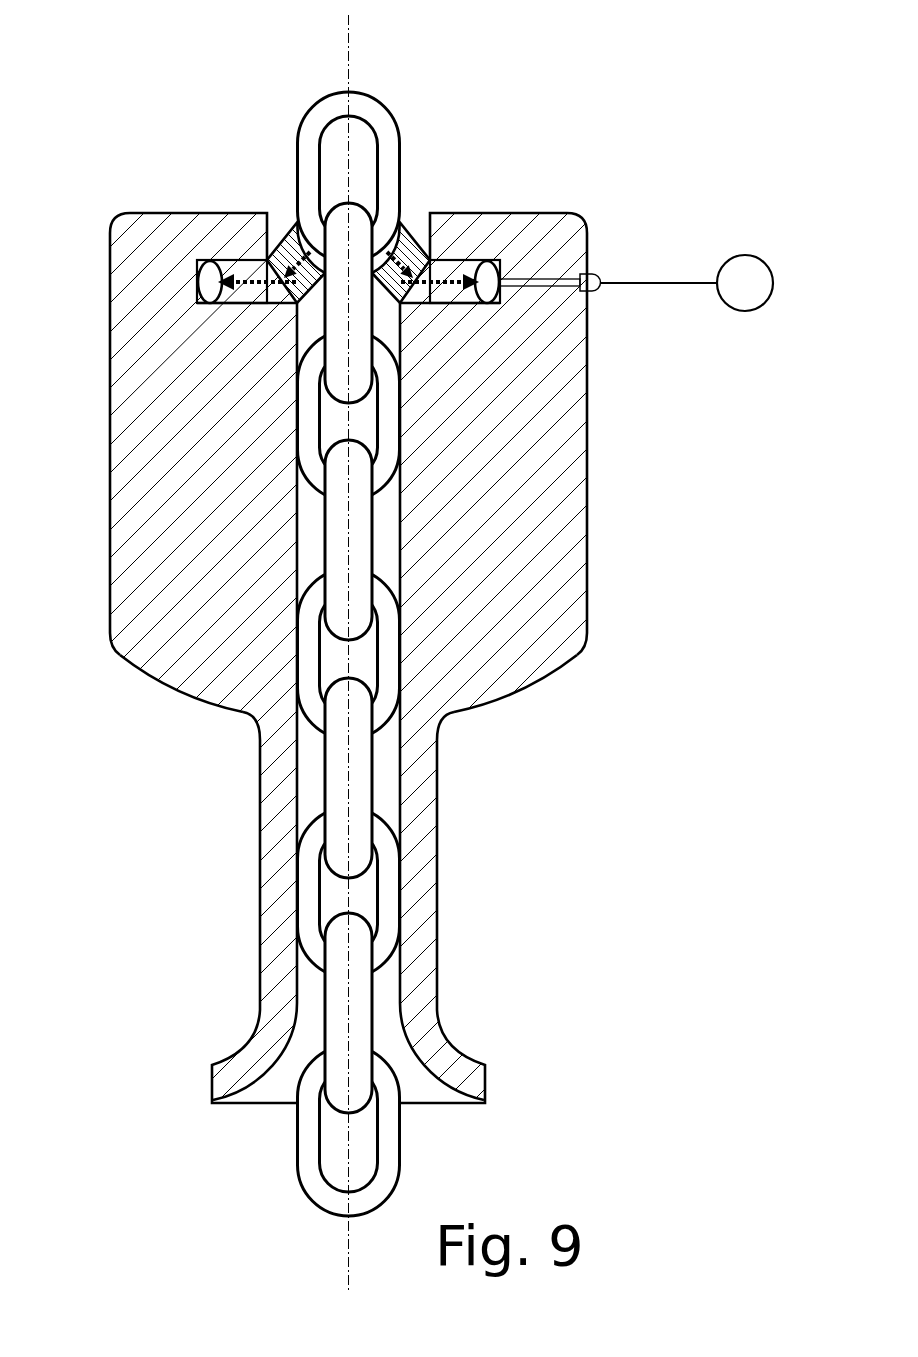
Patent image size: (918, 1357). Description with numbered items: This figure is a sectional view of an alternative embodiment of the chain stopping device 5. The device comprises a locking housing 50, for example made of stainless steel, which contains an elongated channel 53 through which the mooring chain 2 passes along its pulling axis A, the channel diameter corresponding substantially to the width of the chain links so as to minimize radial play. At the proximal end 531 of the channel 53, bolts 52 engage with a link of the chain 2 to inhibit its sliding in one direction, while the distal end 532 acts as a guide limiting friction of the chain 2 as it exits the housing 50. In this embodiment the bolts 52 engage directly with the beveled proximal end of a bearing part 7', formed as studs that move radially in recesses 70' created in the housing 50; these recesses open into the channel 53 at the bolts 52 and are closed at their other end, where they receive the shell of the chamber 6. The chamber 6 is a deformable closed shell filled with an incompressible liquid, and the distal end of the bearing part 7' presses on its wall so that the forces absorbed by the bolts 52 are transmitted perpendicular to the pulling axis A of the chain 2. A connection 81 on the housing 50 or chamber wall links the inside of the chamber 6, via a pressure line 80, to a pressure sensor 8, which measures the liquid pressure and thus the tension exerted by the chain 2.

The mooring chain 2 is at (298, 155).
The chain stopping device 5 is at (607, 510).
The chamber 6 is at (211, 282).
The bearing part 7' is at (352, 237).
The pressure sensor 8 is at (742, 258).
The pressure line 80 is at (660, 283).
The connection 81 is at (583, 280).
The locking housing 50 is at (520, 687).
The bolts 52 is at (287, 237).
The channel 53 is at (385, 535).
The proximal end of the channel 531 is at (297, 303).
The distal end of the channel 532 is at (263, 1103).
The recesses 70' is at (355, 331).
The pulling axis A is at (348, 47).